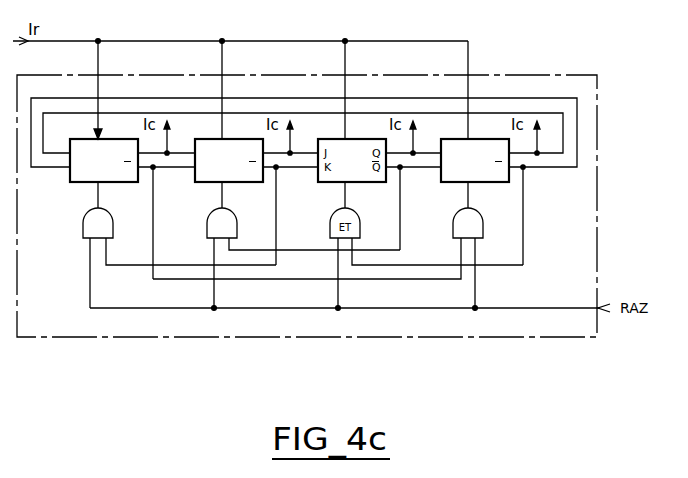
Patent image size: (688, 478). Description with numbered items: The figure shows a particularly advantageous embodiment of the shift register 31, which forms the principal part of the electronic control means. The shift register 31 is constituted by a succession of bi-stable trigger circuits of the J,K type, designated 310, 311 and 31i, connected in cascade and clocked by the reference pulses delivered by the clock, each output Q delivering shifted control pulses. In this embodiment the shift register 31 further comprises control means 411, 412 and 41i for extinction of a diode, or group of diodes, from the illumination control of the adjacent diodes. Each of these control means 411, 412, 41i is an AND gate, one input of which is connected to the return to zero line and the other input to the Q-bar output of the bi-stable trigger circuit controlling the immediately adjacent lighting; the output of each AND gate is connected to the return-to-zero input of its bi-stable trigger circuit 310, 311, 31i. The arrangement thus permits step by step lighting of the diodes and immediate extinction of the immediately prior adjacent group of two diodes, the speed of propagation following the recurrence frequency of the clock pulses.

The shift register 31 is at (83, 328).
The bi-stable trigger circuit 310 is at (88, 183).
The bi-stable trigger circuit 311 is at (211, 183).
The bi-stable trigger circuit 31i is at (453, 183).
The control means for extinction 411 is at (84, 230).
The control means for extinction 412 is at (208, 223).
The control means for extinction 41i is at (456, 226).